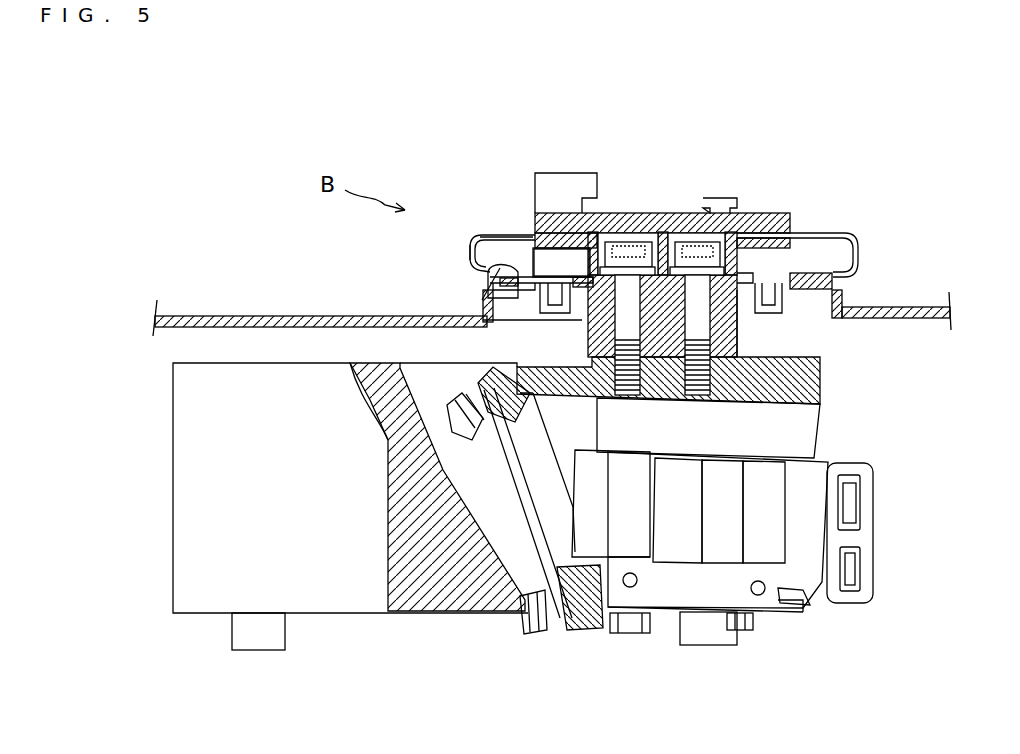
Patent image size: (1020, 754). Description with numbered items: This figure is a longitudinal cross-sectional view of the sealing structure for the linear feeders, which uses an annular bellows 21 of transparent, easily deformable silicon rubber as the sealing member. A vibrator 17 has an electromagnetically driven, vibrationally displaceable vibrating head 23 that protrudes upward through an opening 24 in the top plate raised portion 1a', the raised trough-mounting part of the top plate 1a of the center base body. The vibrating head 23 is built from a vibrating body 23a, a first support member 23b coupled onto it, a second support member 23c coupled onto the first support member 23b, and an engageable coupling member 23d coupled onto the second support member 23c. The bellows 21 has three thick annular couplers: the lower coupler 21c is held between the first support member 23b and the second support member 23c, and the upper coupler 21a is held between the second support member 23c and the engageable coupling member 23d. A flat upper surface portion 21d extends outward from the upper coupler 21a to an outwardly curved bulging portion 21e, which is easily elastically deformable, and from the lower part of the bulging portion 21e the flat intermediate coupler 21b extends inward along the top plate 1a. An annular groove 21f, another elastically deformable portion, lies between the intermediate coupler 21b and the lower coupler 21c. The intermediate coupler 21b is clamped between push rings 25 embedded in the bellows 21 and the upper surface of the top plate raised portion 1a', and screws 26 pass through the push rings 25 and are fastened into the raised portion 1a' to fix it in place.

The top plate 1a is at (320, 304).
The top plate raised portion 1a' is at (891, 298).
The vibrator 17 is at (788, 610).
The annular bellows 21 is at (832, 235).
The upper coupler 21a is at (544, 213).
The intermediate coupler 21b is at (493, 322).
The lower coupler 21c is at (582, 318).
The flat upper surface portion 21d is at (505, 235).
The bulging portion 21e is at (470, 252).
The groove 21f is at (555, 283).
The vibrating head 23 is at (628, 212).
The vibrating body 23a is at (822, 388).
The first support member 23b is at (739, 340).
The second support member 23c is at (757, 233).
The engageable coupling member 23d is at (665, 213).
The opening 24 is at (787, 295).
The push rings 25 is at (810, 264).
The screws 26 is at (487, 272).